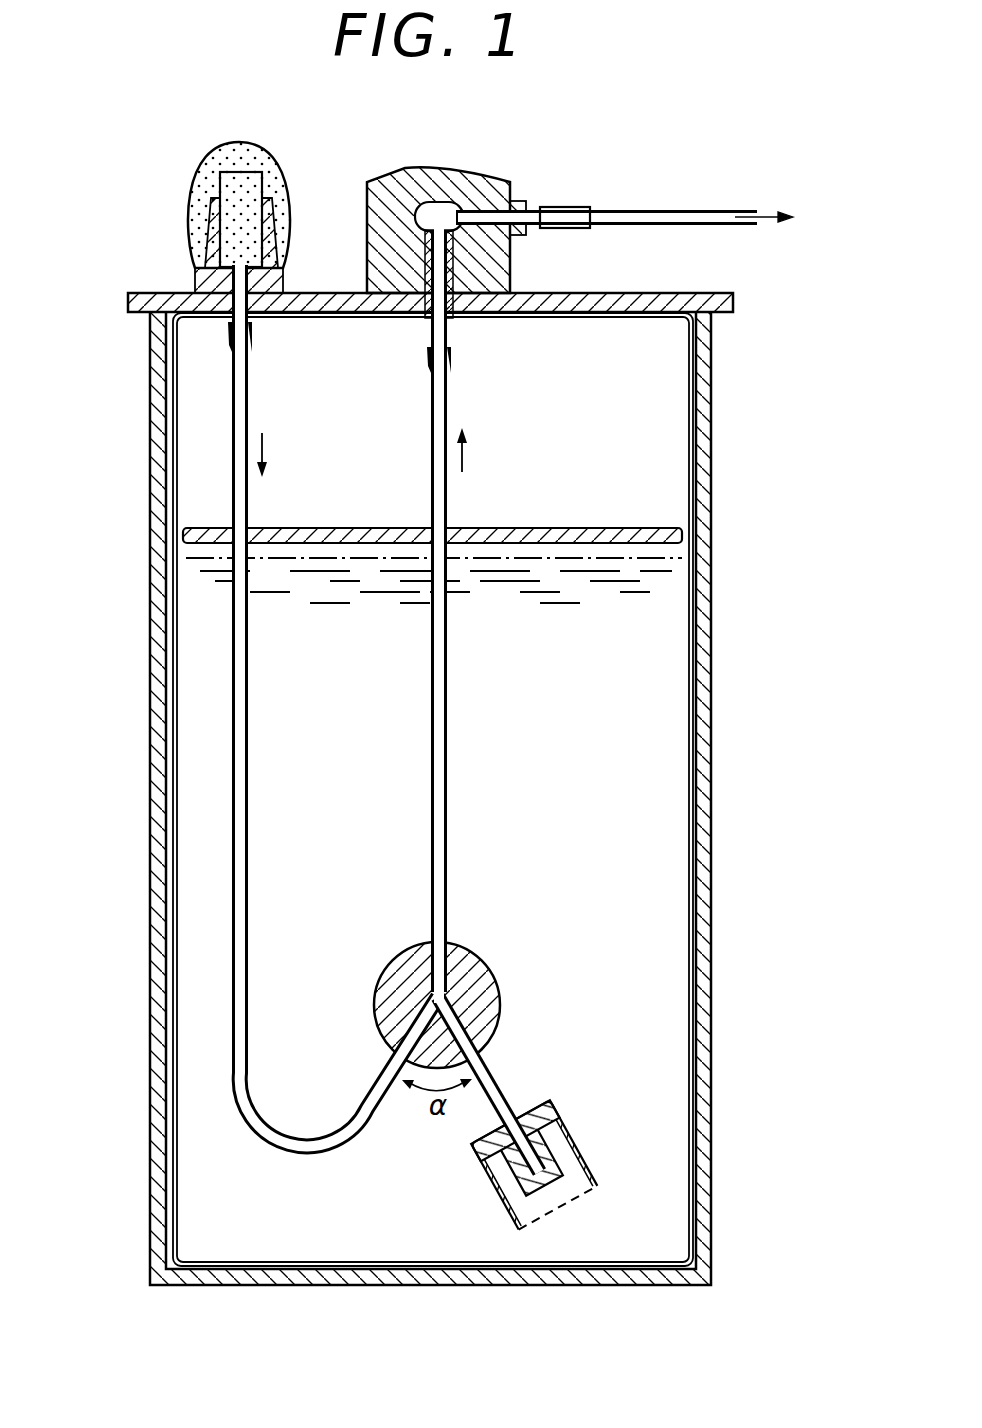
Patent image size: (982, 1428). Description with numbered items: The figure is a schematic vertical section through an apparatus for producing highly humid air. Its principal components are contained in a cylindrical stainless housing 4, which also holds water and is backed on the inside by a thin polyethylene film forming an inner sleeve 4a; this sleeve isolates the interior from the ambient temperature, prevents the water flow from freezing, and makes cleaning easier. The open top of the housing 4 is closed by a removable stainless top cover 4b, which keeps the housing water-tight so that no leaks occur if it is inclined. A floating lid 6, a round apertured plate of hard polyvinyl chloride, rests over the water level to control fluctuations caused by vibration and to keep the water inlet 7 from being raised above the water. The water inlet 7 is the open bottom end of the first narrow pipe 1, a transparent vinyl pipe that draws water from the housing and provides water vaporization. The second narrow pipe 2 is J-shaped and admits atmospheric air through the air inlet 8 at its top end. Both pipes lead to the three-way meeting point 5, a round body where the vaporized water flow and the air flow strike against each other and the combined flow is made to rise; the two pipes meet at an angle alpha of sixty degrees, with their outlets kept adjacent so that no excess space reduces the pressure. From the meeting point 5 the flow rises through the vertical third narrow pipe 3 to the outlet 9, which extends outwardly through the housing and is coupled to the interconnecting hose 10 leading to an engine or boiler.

The first narrow pipe 1 is at (502, 1090).
The second narrow pipe 2 is at (233, 773).
The third narrow pipe 3 is at (447, 744).
The housing 4 is at (711, 463).
The inner sleeve 4a is at (688, 384).
The top cover 4b is at (722, 299).
The three-way meeting point 5 is at (497, 978).
The floating lid 6 is at (645, 527).
The water inlet 7 is at (588, 1158).
The air inlet 8 is at (195, 178).
The outlet 9 is at (500, 180).
The interconnecting hose 10 is at (637, 208).